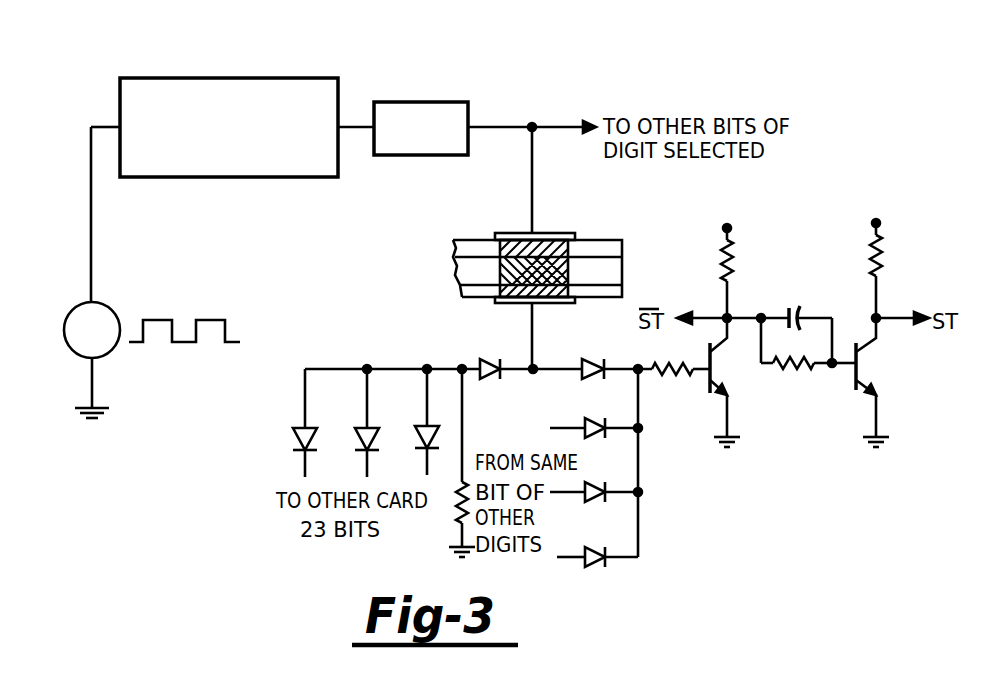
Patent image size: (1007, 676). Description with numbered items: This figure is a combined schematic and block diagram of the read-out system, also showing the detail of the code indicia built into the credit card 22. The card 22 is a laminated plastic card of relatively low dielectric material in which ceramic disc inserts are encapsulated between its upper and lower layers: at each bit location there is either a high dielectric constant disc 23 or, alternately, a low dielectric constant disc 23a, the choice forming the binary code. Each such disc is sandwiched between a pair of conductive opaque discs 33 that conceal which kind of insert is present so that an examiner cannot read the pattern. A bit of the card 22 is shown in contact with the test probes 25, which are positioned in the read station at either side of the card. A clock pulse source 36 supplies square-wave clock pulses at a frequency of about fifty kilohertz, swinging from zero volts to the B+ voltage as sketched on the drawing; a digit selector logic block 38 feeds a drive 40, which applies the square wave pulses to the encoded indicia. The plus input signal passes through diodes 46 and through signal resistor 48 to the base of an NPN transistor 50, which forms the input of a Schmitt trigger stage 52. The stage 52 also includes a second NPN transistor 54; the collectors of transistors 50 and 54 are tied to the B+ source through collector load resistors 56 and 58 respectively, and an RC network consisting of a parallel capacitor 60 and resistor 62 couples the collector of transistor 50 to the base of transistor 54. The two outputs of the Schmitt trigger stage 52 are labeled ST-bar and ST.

The credit card 22 is at (600, 304).
The high dielectric constant disc 23 is at (595, 263).
The low dielectric constant disc 23a is at (595, 263).
The test probe 25 is at (505, 233).
The conductive opaque disc 33 is at (572, 250).
The clock pulse source 36 is at (103, 303).
The digit selector logic 38 is at (250, 78).
The drive 40 is at (437, 78).
The diode 46 is at (610, 400).
The signal resistor 48 is at (670, 376).
The NPN transistor 50 is at (706, 388).
The Schmitt trigger stage 52 is at (806, 365).
The second NPN transistor 54 is at (868, 352).
The collector load resistor 56 is at (733, 258).
The collector load resistor 58 is at (880, 264).
The capacitor 60 is at (800, 314).
The resistor 62 is at (794, 368).